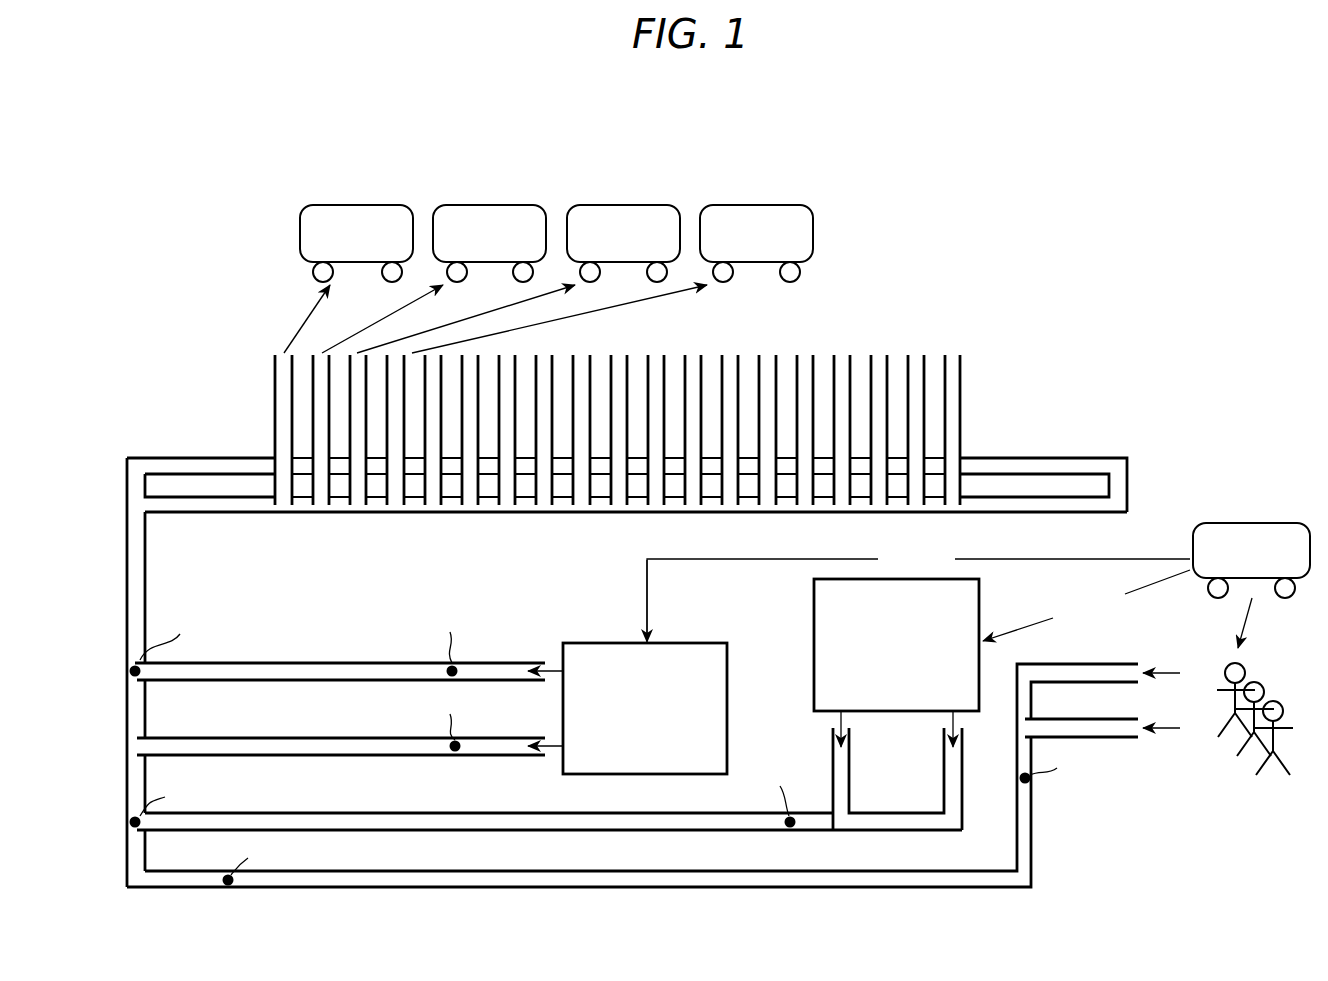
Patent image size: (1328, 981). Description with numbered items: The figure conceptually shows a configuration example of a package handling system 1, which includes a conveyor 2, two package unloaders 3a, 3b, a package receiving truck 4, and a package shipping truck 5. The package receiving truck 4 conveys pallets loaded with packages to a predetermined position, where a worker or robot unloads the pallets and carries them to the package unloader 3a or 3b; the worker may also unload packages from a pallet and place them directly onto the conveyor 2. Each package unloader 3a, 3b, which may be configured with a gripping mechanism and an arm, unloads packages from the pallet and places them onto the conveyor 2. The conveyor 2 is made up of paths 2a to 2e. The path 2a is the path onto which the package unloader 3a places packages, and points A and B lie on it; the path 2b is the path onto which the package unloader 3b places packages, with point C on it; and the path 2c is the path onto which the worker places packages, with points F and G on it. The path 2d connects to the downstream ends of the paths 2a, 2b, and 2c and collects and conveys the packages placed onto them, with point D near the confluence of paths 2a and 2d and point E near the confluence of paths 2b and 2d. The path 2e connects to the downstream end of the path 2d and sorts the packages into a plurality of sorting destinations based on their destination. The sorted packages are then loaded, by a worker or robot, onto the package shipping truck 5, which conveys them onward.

The package handling system 1 is at (714, 138).
The conveyor 2 is at (1040, 458).
The path 2a is at (545, 759).
The path 2b is at (145, 831).
The path 2c is at (1143, 889).
The path 2d is at (120, 512).
The path 2e is at (1127, 516).
The package unloader 3a is at (598, 643).
The package unloader 3b is at (814, 615).
The package receiving truck 4 is at (1250, 523).
The package shipping truck 5 is at (810, 192).